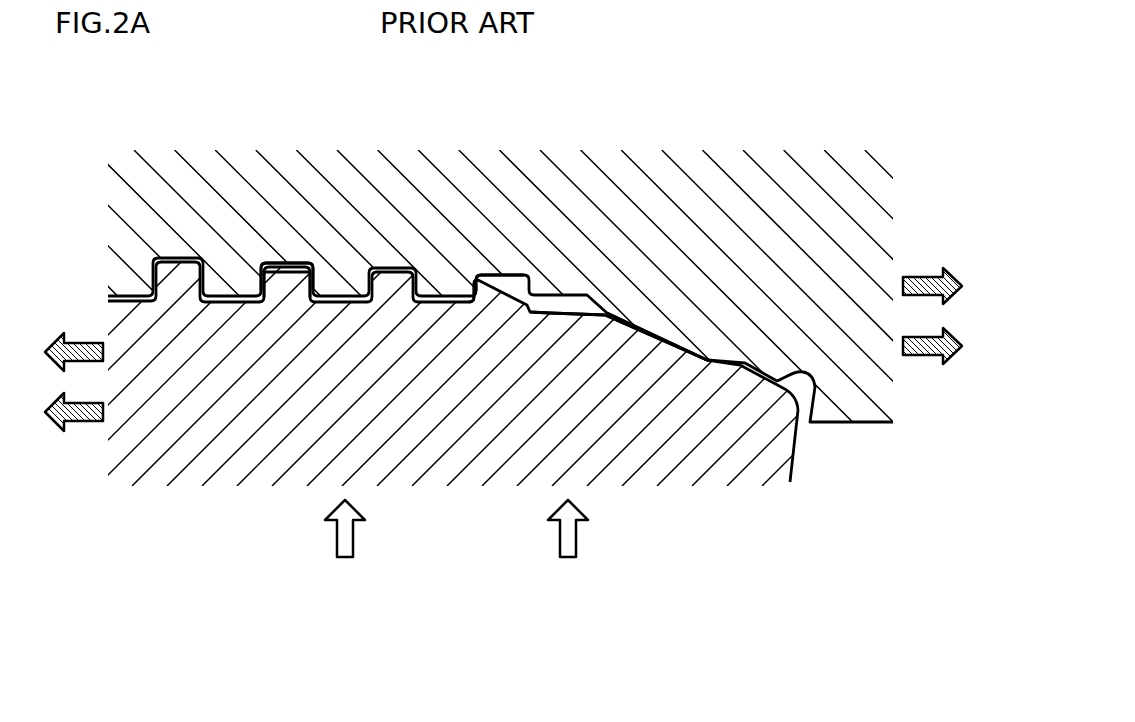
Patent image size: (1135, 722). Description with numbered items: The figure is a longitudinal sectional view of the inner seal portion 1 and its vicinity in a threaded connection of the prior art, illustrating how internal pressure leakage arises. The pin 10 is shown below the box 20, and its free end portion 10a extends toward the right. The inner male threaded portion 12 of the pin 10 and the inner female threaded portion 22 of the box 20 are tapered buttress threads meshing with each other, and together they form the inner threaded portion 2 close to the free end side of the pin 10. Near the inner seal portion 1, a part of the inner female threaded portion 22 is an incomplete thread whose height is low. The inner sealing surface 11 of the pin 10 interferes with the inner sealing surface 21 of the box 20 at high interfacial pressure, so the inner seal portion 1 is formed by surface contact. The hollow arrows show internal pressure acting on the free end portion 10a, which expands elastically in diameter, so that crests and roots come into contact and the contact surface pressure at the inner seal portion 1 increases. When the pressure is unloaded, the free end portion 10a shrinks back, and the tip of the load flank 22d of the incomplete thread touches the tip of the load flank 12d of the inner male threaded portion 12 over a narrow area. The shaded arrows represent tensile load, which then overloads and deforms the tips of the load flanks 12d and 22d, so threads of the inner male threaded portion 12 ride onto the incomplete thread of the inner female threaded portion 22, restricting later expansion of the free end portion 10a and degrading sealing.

The inner seal portion 1 is at (607, 537).
The inner threaded portion 2 is at (357, 98).
The pin 10 is at (737, 503).
The free end portion 10a is at (553, 470).
The inner sealing surface 11 is at (657, 320).
The inner male threaded portion 12 is at (321, 325).
The load flank 12d is at (465, 302).
The box 20 is at (754, 133).
The inner sealing surface 21 is at (657, 320).
The inner female threaded portion 22 is at (294, 236).
The load flank 22d is at (487, 277).